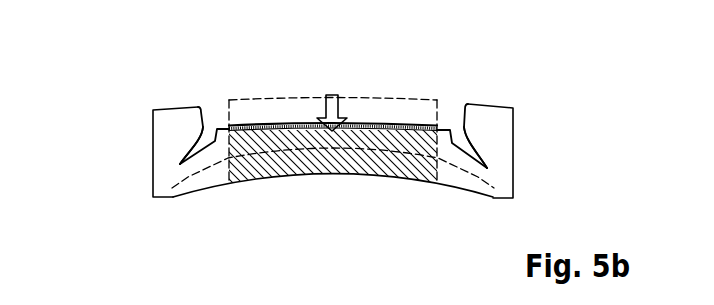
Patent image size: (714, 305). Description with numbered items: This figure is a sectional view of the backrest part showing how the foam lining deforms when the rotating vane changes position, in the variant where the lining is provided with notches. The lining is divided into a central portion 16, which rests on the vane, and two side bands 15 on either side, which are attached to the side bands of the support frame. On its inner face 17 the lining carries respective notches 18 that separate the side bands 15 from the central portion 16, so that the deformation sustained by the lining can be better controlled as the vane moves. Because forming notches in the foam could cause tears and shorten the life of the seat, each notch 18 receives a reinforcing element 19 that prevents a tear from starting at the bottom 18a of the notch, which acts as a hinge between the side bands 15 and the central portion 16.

The side bands of the lining 15 is at (167, 107).
The central portion of the lining 16 is at (393, 134).
The inner face of the lining 17 is at (275, 124).
The notches 18 is at (201, 124).
The bottom of the notches 18a is at (185, 159).
The reinforcing elements 19 is at (202, 145).